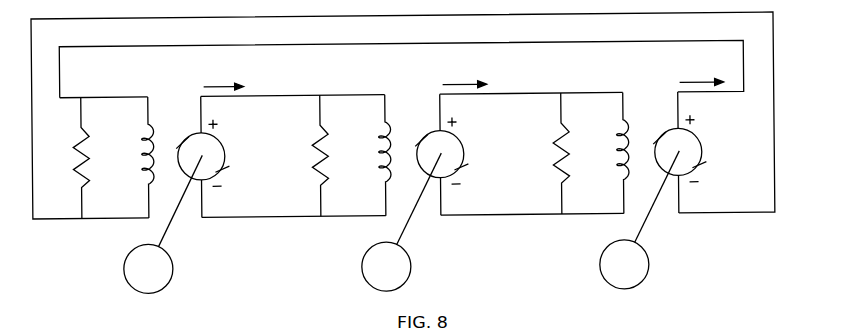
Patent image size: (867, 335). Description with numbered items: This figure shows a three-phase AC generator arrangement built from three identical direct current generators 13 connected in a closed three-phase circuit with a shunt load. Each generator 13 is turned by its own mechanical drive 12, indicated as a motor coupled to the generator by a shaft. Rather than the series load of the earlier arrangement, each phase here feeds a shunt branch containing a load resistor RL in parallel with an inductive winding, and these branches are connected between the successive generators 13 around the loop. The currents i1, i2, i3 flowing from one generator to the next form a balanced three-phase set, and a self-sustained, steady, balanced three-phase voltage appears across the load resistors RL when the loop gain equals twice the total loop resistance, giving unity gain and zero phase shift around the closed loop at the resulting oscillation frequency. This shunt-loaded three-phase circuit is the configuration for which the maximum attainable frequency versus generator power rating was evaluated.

The mechanical drive 12 is at (170, 266).
The generator 13 is at (222, 150).
The load resistor RL is at (556, 175).
The current i1 is at (223, 76).
The current i2 is at (464, 73).
The current i3 is at (701, 68).